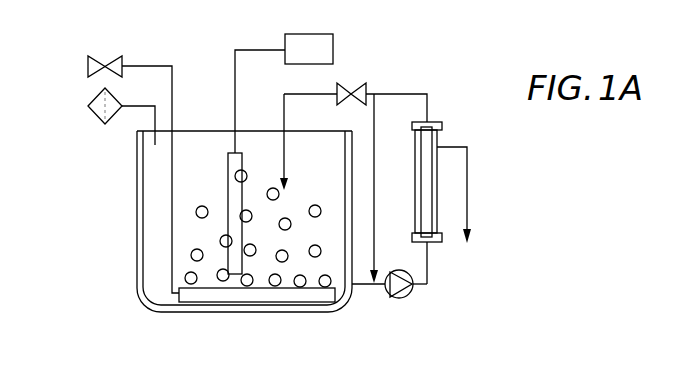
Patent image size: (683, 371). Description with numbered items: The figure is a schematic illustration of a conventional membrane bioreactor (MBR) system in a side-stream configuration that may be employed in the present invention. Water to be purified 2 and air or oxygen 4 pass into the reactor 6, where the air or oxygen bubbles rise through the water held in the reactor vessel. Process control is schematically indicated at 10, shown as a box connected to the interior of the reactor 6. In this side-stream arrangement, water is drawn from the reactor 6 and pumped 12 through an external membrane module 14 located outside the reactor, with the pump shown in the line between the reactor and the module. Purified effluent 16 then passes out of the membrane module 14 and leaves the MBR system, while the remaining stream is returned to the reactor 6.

The water to be purified 2 is at (78, 106).
The air or oxygen 4 is at (78, 66).
The reactor 6 is at (153, 275).
The process control 10 is at (313, 42).
The pump 12 is at (407, 293).
The external membrane module 14 is at (428, 140).
The purified effluent 16 is at (467, 202).